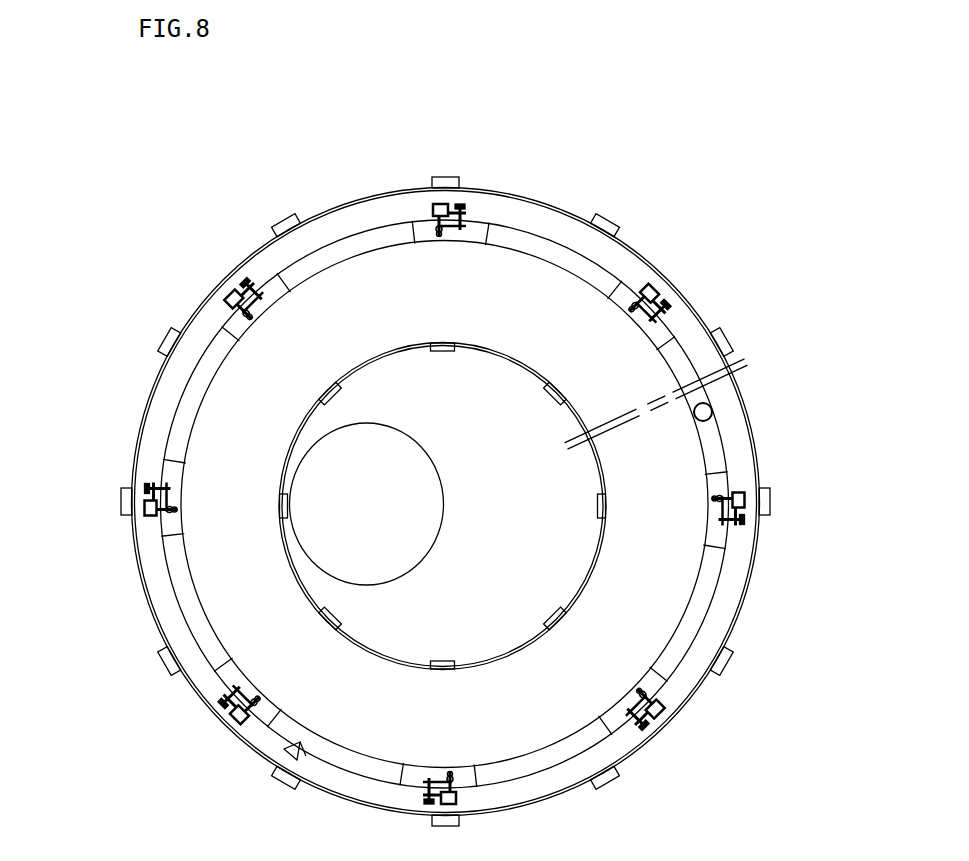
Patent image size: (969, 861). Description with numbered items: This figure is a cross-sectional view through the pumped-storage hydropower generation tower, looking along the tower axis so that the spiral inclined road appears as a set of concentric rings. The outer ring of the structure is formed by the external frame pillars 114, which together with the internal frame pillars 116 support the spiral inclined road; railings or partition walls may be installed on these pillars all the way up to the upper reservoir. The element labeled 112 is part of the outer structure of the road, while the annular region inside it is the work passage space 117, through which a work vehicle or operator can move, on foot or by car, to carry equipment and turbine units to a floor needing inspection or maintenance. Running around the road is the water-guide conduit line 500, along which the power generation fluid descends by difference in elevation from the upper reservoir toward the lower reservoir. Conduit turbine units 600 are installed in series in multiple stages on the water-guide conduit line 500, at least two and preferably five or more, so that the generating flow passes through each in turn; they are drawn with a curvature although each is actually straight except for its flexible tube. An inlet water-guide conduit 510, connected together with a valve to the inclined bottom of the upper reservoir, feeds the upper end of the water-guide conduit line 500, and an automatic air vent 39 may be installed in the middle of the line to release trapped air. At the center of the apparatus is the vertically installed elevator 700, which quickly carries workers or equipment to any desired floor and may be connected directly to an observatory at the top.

The outer housing (pressure vessel) 112 is at (317, 220).
The work passage space 117 is at (237, 395).
The water-guide conduit line 500 is at (553, 246).
The conduit turbine unit 600 is at (456, 186).
The external frame pillar 114 is at (713, 344).
The inlet water-guide conduit 510 is at (713, 404).
The internal frame pillar 116 is at (600, 503).
The elevator 700 is at (317, 537).
The automatic air vent 39 is at (284, 758).